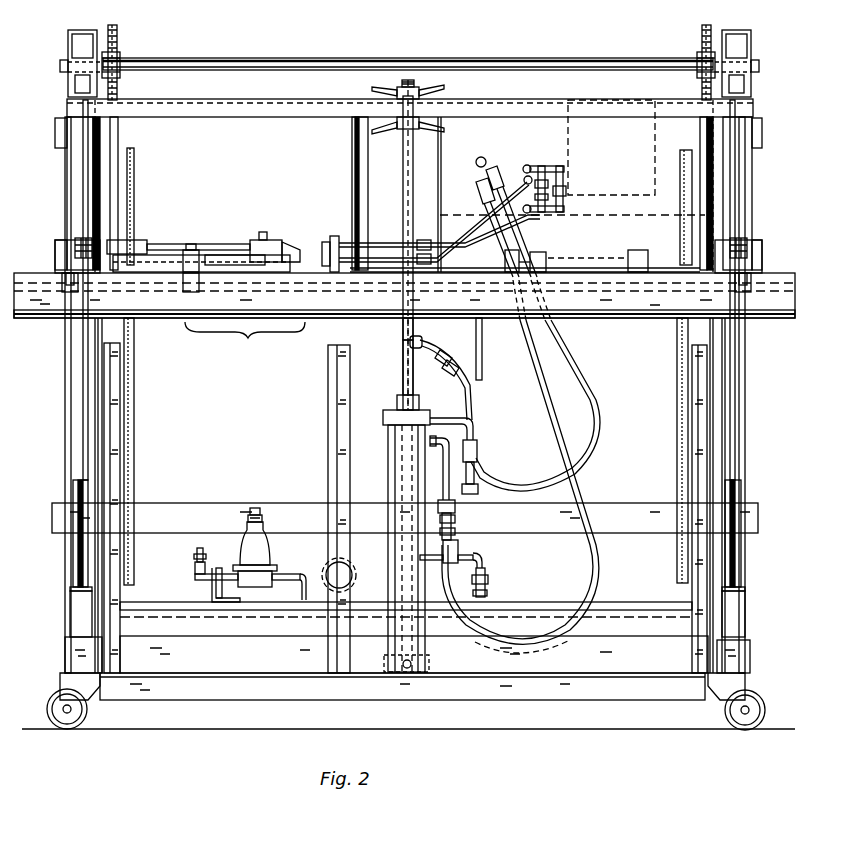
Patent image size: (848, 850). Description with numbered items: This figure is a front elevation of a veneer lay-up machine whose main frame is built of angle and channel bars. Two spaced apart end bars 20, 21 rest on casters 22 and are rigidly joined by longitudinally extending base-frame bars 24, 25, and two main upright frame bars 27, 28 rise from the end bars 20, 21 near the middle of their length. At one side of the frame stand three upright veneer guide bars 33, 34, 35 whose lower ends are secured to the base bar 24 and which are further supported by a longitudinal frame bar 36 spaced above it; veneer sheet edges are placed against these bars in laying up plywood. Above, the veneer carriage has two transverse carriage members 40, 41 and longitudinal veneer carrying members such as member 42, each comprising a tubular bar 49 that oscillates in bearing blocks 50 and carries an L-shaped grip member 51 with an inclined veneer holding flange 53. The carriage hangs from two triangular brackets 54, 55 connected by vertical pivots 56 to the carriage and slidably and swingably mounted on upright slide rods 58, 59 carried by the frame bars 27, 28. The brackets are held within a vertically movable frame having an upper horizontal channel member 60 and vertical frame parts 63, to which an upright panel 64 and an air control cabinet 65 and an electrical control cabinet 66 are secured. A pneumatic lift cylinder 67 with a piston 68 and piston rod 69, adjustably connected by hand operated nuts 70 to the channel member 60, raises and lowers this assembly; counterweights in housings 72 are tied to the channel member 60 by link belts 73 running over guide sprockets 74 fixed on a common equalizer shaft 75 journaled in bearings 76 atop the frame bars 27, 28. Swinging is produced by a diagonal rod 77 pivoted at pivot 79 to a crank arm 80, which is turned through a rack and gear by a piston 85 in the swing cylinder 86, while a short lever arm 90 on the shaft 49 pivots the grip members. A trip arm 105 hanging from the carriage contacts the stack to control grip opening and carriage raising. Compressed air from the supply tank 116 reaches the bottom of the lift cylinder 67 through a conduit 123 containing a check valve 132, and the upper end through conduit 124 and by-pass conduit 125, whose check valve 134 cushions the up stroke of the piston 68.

The end bar 20 is at (65, 655).
The end bar 21 is at (750, 668).
The casters 22 is at (88, 716).
The base-frame bar 24 is at (642, 645).
The base-frame bar 25 is at (606, 700).
The upright frame bar 27 is at (66, 404).
The upright frame bar 28 is at (745, 443).
The veneer guide bar 33 is at (108, 412).
The veneer guide bar 34 is at (330, 393).
The veneer guide bar 35 is at (700, 424).
The longitudinal frame bar 36 is at (646, 508).
The transverse carriage member 40 is at (42, 259).
The transverse carriage member 41 is at (761, 260).
The veneer carrying carriage member 42 is at (245, 338).
The tubular bar 49 is at (232, 290).
The bearing blocks 50 is at (64, 292).
The grip member 51 is at (368, 322).
The veneer holding flange 53 is at (387, 326).
The triangular bracket 54 is at (72, 187).
The triangular bracket 55 is at (742, 190).
The vertical pivot 56 is at (88, 238).
The upright slide rod 58 is at (82, 337).
The upright slide rod 59 is at (736, 383).
The horizontal channel member 60 is at (290, 117).
The vertical frame parts 63 is at (118, 133).
The upright panel 64 is at (516, 117).
The air control cabinet 65 is at (565, 214).
The electrical control cabinet 66 is at (630, 101).
The pneumatic lift cylinder 67 is at (390, 482).
The piston 68 is at (388, 436).
The piston rod 69 is at (414, 152).
The hand operated nuts 70 is at (430, 95).
The counterweight housing 72 is at (135, 165).
The link belt 73 is at (118, 36).
The guide sprocket 74 is at (120, 58).
The equalizer shaft 75 is at (258, 60).
The bearing 76 is at (72, 55).
The diagonal rod 77 is at (167, 250).
The pivot 79 is at (263, 234).
The crank arm 80 is at (305, 240).
The piston 85 is at (545, 256).
The swing cylinder 86 is at (617, 258).
The lever arm 90 is at (194, 256).
The trip arm 105 is at (483, 365).
The air pressure supply tank 116 is at (628, 606).
The conduit 123 is at (465, 554).
The conduit 124 is at (450, 542).
The by-pass conduit 125 is at (445, 416).
The check valve 132 is at (488, 582).
The check valve 134 is at (477, 434).